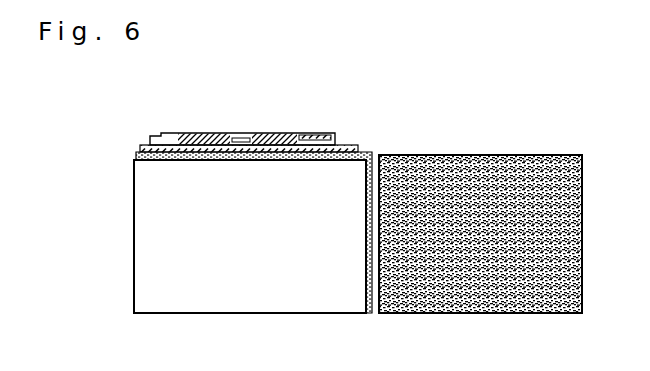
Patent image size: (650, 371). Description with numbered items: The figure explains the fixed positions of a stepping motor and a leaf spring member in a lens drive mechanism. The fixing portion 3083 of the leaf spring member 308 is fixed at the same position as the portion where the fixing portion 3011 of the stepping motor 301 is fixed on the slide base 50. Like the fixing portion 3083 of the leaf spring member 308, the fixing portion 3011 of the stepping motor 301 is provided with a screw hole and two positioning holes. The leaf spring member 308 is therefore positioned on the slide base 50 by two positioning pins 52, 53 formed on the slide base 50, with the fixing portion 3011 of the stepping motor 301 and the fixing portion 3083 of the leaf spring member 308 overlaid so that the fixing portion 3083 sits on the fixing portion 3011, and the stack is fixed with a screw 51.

The slide base 50 is at (260, 302).
The screw 51 is at (158, 137).
The positioning pin 52 is at (247, 133).
The positioning pin 53 is at (325, 133).
The stepping motor 301 is at (470, 155).
The leaf spring member 308 is at (208, 133).
The fixing portion of the stepping motor 3011 is at (138, 153).
The fixing portion of the leaf spring member 3083 is at (358, 148).